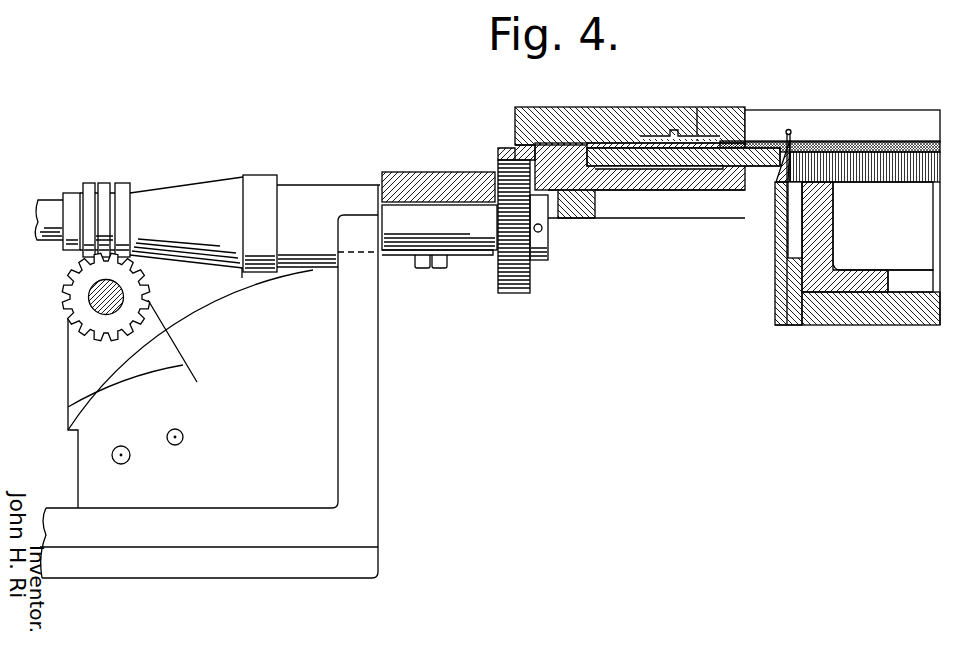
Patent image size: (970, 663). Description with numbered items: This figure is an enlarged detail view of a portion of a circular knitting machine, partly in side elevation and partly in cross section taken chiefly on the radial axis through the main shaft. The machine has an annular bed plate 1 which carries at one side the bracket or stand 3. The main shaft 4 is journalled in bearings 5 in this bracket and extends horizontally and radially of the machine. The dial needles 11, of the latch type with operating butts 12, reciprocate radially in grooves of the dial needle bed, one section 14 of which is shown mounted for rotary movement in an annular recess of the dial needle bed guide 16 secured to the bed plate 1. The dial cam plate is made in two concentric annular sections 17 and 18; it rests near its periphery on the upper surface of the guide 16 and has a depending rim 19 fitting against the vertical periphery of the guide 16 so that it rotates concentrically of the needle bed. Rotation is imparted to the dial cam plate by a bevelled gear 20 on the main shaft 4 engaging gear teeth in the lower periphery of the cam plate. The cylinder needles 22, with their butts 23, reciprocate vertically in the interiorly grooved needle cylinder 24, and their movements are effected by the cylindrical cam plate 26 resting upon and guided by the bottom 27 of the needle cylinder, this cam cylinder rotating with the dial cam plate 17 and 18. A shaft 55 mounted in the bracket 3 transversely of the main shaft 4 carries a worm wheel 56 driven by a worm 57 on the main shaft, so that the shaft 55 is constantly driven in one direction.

The bed plate 1 is at (423, 173).
The bracket or stand 3 is at (358, 423).
The main shaft 4 is at (50, 203).
The bearings 5 is at (320, 188).
The dial needles 11 is at (687, 147).
The operating butts 12 is at (675, 132).
The dial needle bed section 14 is at (683, 161).
The dial needle bed guide 16 is at (638, 180).
The dial cam plate section 17 is at (608, 113).
The dial cam plate section 18 is at (725, 115).
The depending rim 19 is at (522, 152).
The bevelled gear 20 is at (510, 287).
The cylinder needles 22 is at (785, 200).
The butts 23 is at (792, 223).
The needle cylinder 24 is at (775, 292).
The cylindrical cam plate 26 is at (823, 220).
The bottom of the needle cylinder 27 is at (840, 310).
The shaft 55 is at (118, 300).
The worm wheel 56 is at (149, 280).
The worm 57 is at (118, 180).